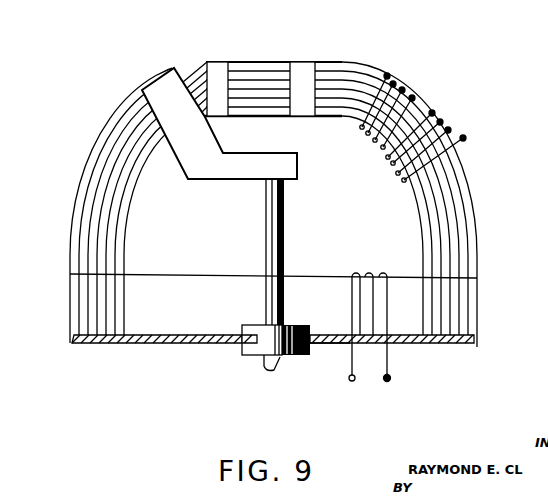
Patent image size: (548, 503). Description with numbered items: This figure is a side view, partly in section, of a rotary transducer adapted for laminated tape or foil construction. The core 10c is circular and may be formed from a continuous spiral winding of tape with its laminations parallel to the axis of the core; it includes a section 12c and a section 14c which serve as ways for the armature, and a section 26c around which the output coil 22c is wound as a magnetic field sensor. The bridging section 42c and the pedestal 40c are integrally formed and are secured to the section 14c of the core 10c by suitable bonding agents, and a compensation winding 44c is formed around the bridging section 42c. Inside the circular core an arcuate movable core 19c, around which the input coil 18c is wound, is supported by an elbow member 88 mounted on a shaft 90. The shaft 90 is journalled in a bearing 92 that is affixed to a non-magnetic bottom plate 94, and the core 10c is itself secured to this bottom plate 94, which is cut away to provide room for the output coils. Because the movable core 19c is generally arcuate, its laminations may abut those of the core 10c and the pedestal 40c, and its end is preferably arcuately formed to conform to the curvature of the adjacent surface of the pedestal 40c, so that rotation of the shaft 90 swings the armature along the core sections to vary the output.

The core 10c is at (216, 274).
The section of the core 12c is at (85, 312).
The section of the core 14c is at (469, 320).
The input coil 18c is at (398, 80).
The movable core 19c is at (195, 78).
The output coil 22c is at (384, 273).
The section of the core 26c is at (197, 343).
The pedestal 40c is at (274, 62).
The bridging section 42c is at (452, 163).
The compensation winding 44c is at (447, 141).
The elbow member 88 is at (194, 157).
The shaft 90 is at (286, 215).
The bearing 92 is at (282, 360).
The bottom plate 94 is at (336, 347).